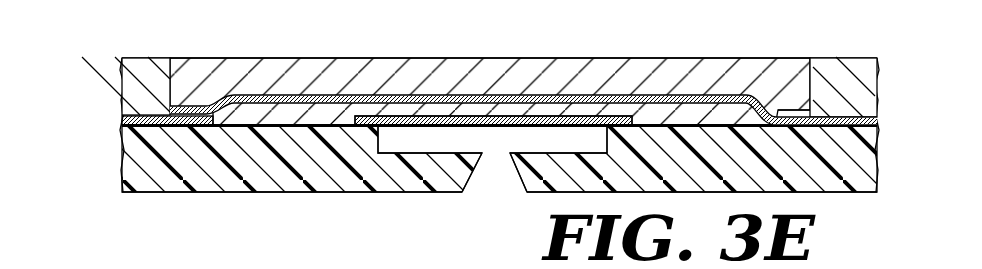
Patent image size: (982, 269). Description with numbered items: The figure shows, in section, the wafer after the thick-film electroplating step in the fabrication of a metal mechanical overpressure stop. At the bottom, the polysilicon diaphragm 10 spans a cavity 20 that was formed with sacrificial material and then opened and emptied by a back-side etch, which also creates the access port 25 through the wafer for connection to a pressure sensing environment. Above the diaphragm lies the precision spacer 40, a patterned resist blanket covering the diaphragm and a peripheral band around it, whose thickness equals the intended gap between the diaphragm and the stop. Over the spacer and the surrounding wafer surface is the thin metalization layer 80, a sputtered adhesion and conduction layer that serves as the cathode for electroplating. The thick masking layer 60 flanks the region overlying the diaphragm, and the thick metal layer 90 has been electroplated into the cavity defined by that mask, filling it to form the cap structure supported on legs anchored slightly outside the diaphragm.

The polysilicon diaphragm 10 is at (554, 123).
The cavity 20 is at (507, 150).
The access port 25 is at (489, 176).
The precision spacer element 40 is at (406, 108).
The masking layer 60 is at (137, 88).
The thin metalization layer 80 is at (597, 98).
The thick metal layer 90 is at (550, 72).